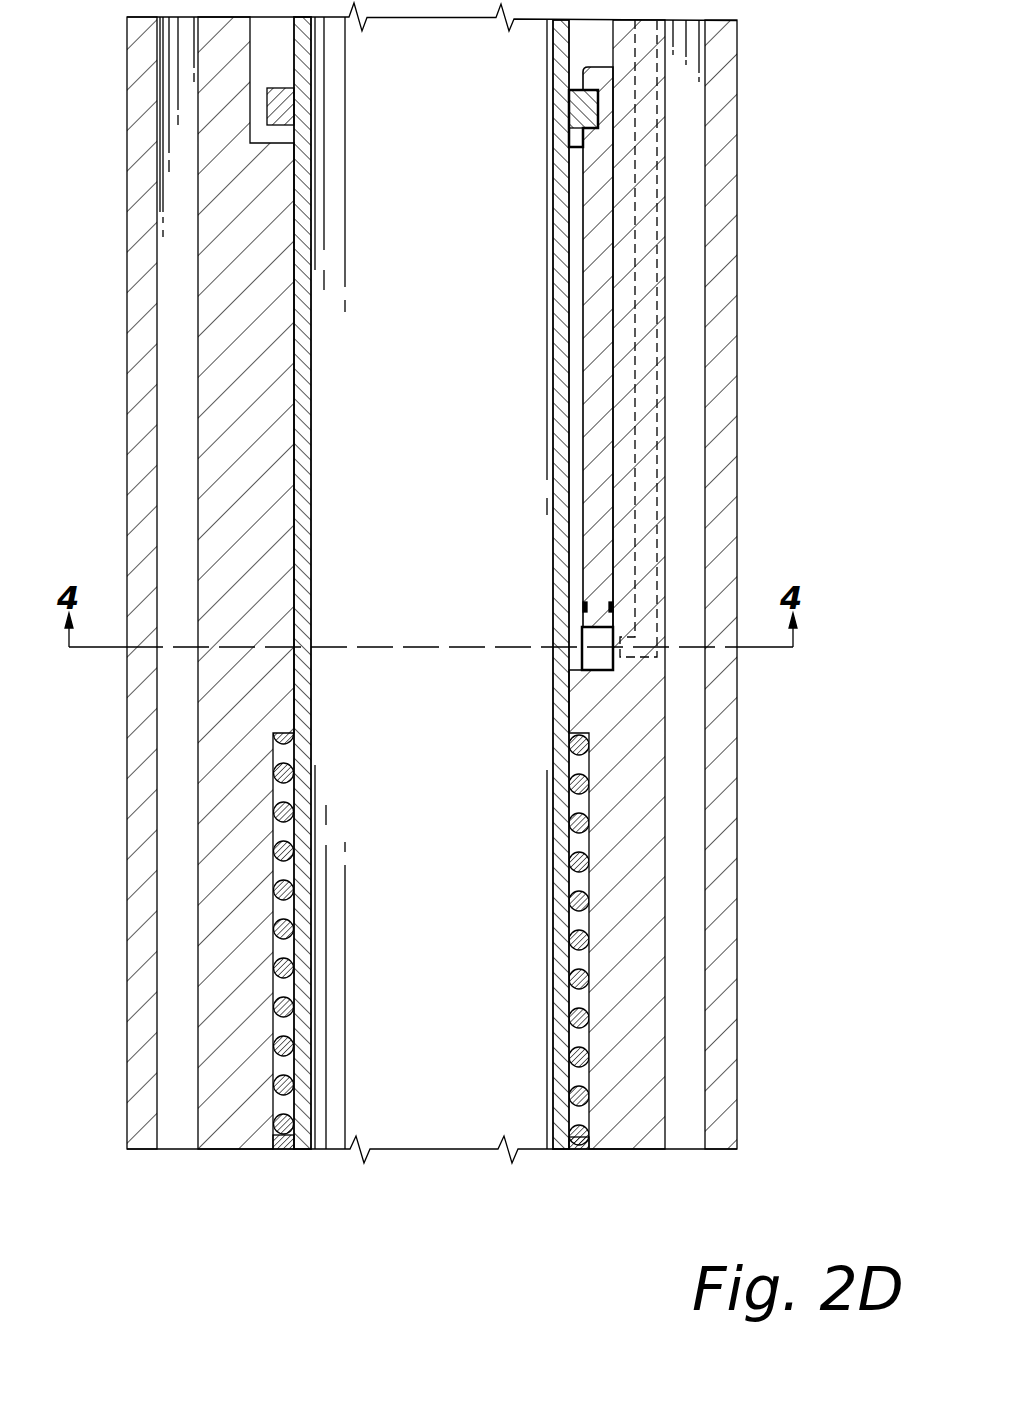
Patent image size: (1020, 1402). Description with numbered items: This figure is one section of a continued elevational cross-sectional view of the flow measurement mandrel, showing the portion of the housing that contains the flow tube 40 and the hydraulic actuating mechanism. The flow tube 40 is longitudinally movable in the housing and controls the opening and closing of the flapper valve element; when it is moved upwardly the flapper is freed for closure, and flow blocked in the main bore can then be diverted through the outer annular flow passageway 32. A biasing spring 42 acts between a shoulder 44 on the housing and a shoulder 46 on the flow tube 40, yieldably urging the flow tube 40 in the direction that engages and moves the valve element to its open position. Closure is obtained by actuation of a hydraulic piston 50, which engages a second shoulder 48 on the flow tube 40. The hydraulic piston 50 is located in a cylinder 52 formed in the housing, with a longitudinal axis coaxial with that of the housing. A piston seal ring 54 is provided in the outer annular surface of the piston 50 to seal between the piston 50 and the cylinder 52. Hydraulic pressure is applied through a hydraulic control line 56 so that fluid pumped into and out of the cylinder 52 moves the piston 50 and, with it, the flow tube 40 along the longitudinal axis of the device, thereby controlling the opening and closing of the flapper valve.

The outer annular flow passageway 32 is at (183, 330).
The flow tube 40 is at (298, 510).
The spring 42 is at (590, 824).
The shoulder 44 is at (278, 781).
The shoulder 46 is at (273, 1142).
The second shoulder 48 is at (600, 110).
The hydraulic piston 50 is at (613, 180).
The cylinder 52 is at (612, 668).
The piston seal ring 54 is at (612, 608).
The hydraulic control line 56 is at (645, 155).